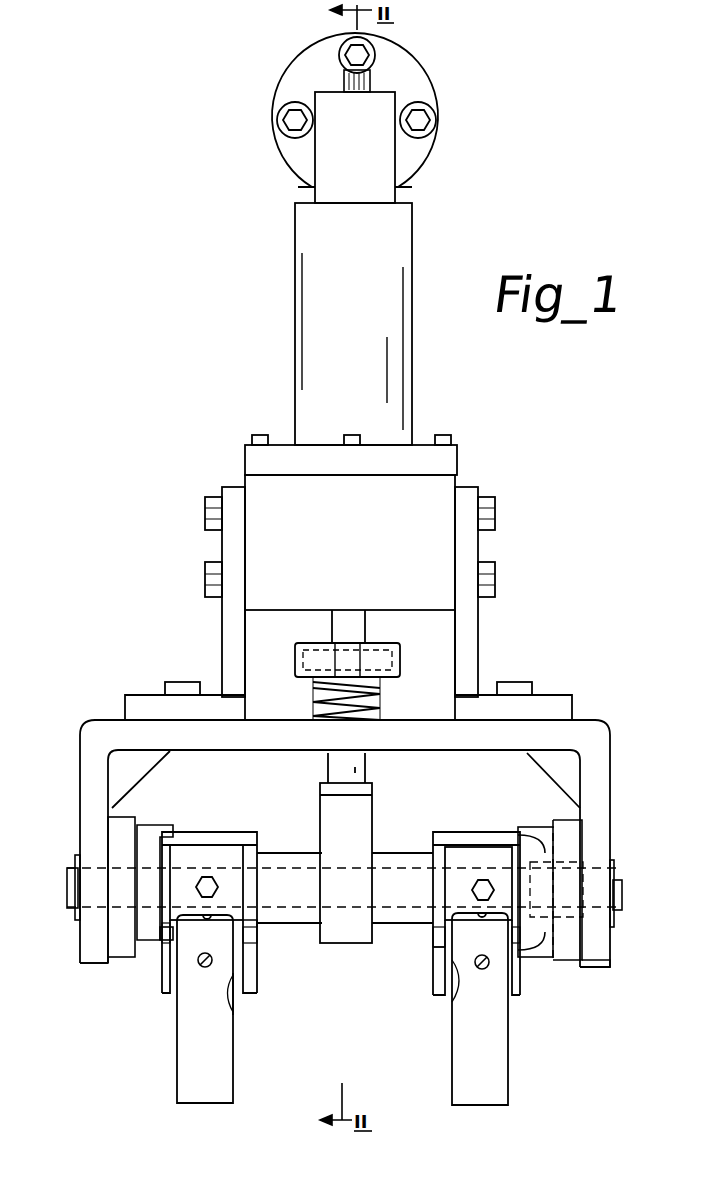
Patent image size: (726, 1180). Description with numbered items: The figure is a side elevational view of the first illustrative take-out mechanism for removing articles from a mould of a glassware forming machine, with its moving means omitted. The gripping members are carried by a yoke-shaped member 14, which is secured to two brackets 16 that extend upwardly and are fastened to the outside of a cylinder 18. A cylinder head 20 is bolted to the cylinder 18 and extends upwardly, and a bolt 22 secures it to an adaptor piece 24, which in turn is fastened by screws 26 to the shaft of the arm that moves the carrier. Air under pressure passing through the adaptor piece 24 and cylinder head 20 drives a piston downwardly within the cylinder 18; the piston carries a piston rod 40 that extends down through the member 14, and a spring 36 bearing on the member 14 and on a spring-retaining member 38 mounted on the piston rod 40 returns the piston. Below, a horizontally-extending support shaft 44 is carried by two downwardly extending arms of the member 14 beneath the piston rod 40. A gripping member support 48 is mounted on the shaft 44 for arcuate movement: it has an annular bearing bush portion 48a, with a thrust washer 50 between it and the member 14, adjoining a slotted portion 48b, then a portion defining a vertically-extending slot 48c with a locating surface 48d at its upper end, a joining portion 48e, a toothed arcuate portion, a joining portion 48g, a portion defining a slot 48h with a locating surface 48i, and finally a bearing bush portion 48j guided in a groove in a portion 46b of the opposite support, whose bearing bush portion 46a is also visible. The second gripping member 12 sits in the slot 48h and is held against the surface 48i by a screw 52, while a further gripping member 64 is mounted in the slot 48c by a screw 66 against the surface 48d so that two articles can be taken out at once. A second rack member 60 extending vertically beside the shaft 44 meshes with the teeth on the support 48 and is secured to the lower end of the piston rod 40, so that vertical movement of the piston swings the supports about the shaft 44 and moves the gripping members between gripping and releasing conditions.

The second gripping member 12 is at (220, 1065).
The yoke-shaped member 14 is at (96, 725).
The brackets 16 is at (235, 633).
The cylinder 18 is at (366, 553).
The cylinder head 20 is at (366, 327).
The bolt 22 is at (346, 82).
The adaptor piece 24 is at (366, 168).
The screws 26 is at (372, 60).
The spring 36 is at (318, 692).
The spring-retaining member 38 is at (390, 678).
The piston rod 40 is at (362, 627).
The support shaft 44 is at (70, 876).
The bearing bush portion 46a is at (115, 952).
The portion of support 46 46b is at (146, 835).
The gripping member support 48 is at (295, 918).
The bearing bush portion 48a is at (570, 960).
The slotted portion 48b is at (540, 960).
The vertically-extending slot 48c is at (450, 997).
The locating surface 48d is at (488, 920).
The joining portion 48e is at (388, 912).
The joining portion 48g is at (268, 925).
The slot 48h is at (225, 990).
The locating surface 48i is at (222, 913).
The bearing bush portion 48j is at (118, 952).
The thrust washer 50 is at (580, 922).
The screw 52 is at (205, 968).
The second rack member 60 is at (360, 843).
The further gripping member 64 is at (496, 1090).
The screws 66 is at (482, 970).